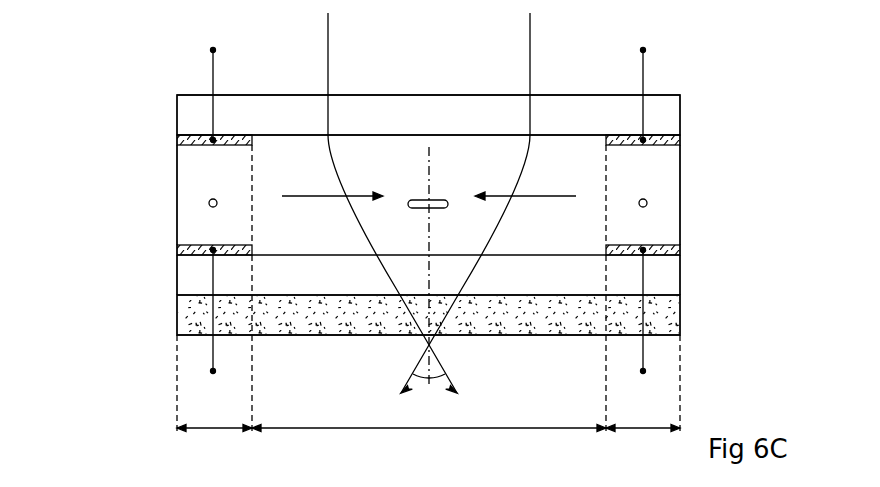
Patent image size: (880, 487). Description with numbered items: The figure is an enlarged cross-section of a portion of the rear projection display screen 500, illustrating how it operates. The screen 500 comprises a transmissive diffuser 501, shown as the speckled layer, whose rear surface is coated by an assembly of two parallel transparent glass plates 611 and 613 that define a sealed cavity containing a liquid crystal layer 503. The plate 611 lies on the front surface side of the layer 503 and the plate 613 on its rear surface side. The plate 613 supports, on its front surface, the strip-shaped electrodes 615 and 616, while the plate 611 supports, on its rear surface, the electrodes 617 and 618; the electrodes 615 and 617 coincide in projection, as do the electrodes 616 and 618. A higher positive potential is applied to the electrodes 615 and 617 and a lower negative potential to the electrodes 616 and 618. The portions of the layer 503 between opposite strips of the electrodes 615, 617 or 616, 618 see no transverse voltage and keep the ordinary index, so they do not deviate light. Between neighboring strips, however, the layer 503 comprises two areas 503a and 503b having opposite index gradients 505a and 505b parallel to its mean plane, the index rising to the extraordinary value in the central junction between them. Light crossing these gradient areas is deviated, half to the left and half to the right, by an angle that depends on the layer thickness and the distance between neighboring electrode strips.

The screen 500 is at (102, 48).
The transmissive diffuser 501 is at (178, 312).
The liquid crystal layer 503 is at (178, 226).
The area of liquid crystal layer 503a is at (285, 145).
The area of liquid crystal layer 503b is at (491, 145).
The index gradient 505a is at (292, 192).
The index gradient 505b is at (583, 178).
The transparent plate 611 is at (178, 276).
The transparent plate 613 is at (176, 112).
The electrode 615 is at (260, 117).
The electrode 616 is at (628, 134).
The electrode 617 is at (240, 256).
The electrode 618 is at (630, 256).